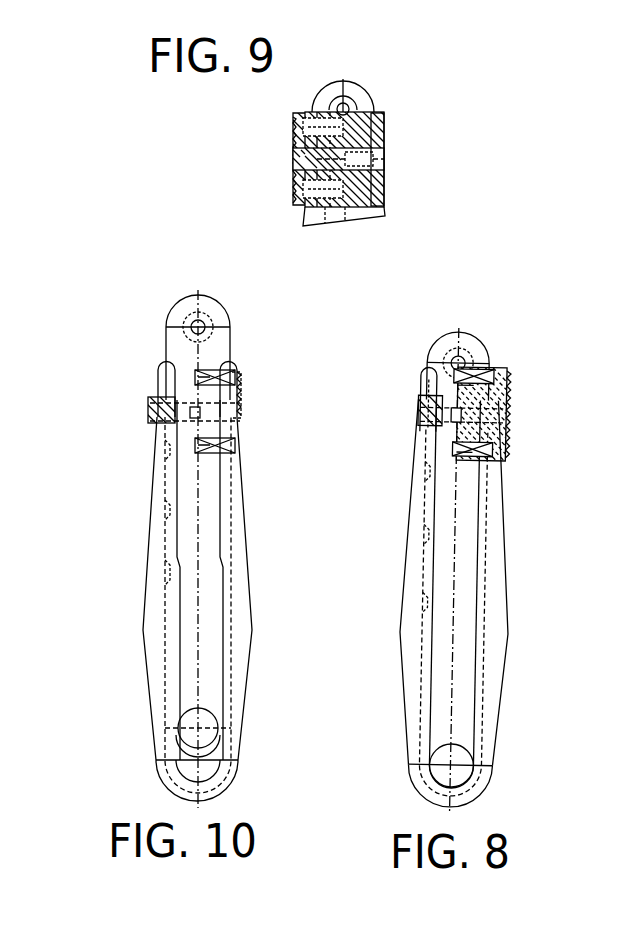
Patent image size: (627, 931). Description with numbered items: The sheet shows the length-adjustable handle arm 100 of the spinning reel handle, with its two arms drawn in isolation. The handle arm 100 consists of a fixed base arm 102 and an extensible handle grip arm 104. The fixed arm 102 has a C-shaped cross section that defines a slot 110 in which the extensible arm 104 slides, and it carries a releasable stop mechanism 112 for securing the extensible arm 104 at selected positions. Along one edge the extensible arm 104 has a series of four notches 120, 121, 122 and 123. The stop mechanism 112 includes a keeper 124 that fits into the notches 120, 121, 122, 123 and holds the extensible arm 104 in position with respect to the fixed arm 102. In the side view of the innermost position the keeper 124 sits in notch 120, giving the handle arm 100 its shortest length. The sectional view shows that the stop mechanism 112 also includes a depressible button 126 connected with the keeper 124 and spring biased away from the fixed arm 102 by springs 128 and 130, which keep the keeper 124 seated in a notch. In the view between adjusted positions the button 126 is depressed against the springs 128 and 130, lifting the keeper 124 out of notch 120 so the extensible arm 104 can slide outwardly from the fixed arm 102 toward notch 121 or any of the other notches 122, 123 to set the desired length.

In FIG. 10, the handle arm 100 is at (118, 545).
In FIG. 8, the handle arm 100 is at (512, 572).
In FIG. 9, the fixed base arm 102 is at (372, 216).
In FIG. 9, the extensible handle grip arm 104 is at (362, 92).
In FIG. 10, the extensible handle grip arm 104 is at (190, 302).
In FIG. 9, the slot 110 is at (320, 222).
In FIG. 9, the releasable stop mechanism 112 is at (266, 127).
In FIG. 10, the notch 120 is at (160, 368).
In FIG. 8, the notch 120 is at (428, 440).
In FIG. 10, the notch 121 is at (172, 456).
In FIG. 8, the notch 121 is at (428, 468).
In FIG. 8, the notch 122 is at (429, 531).
In FIG. 10, the notch 123 is at (168, 585).
In FIG. 8, the notch 123 is at (428, 598).
In FIG. 9, the keeper 124 is at (376, 176).
In FIG. 10, the keeper 124 is at (148, 402).
In FIG. 8, the keeper 124 is at (428, 398).
In FIG. 9, the depressible button 126 is at (298, 158).
In FIG. 10, the depressible button 126 is at (240, 405).
In FIG. 8, the depressible button 126 is at (507, 412).
In FIG. 9, the spring 128 is at (312, 122).
In FIG. 10, the spring 128 is at (225, 453).
In FIG. 8, the spring 128 is at (505, 480).
In FIG. 9, the spring 130 is at (300, 205).
In FIG. 10, the spring 130 is at (215, 368).
In FIG. 8, the spring 130 is at (475, 370).